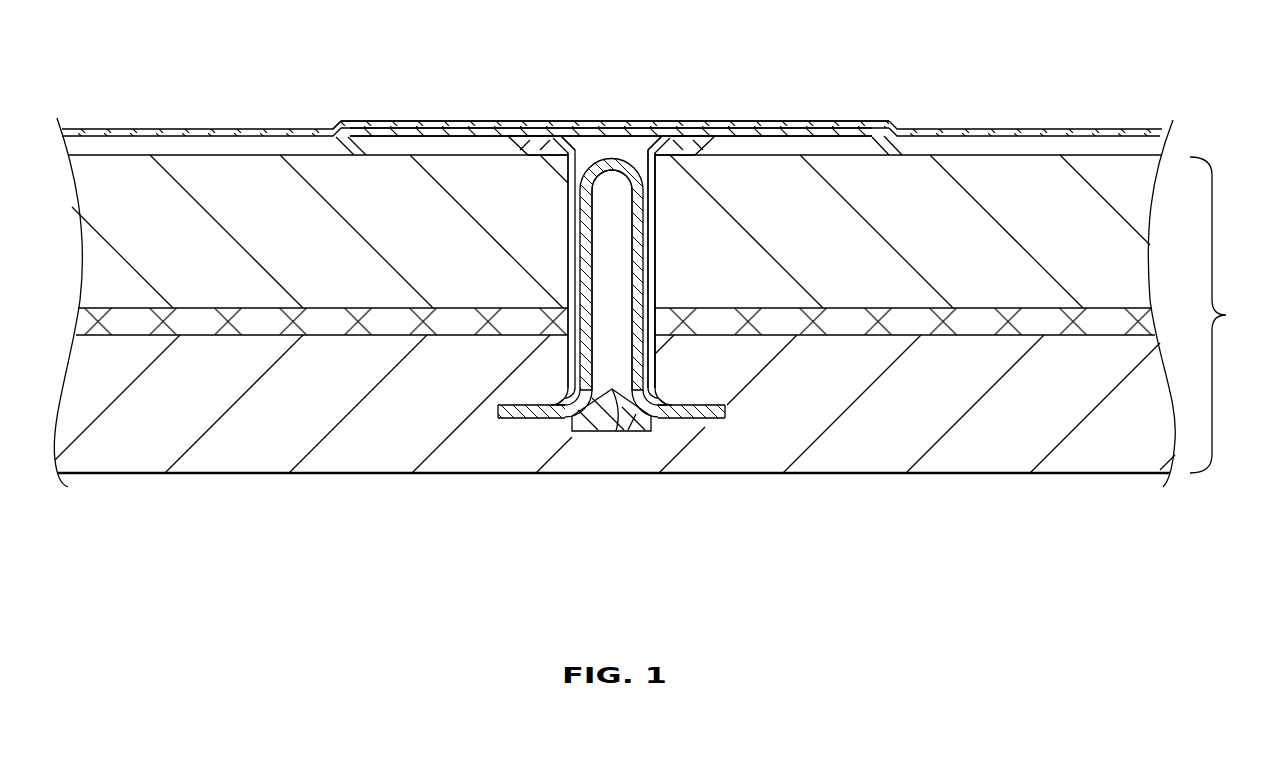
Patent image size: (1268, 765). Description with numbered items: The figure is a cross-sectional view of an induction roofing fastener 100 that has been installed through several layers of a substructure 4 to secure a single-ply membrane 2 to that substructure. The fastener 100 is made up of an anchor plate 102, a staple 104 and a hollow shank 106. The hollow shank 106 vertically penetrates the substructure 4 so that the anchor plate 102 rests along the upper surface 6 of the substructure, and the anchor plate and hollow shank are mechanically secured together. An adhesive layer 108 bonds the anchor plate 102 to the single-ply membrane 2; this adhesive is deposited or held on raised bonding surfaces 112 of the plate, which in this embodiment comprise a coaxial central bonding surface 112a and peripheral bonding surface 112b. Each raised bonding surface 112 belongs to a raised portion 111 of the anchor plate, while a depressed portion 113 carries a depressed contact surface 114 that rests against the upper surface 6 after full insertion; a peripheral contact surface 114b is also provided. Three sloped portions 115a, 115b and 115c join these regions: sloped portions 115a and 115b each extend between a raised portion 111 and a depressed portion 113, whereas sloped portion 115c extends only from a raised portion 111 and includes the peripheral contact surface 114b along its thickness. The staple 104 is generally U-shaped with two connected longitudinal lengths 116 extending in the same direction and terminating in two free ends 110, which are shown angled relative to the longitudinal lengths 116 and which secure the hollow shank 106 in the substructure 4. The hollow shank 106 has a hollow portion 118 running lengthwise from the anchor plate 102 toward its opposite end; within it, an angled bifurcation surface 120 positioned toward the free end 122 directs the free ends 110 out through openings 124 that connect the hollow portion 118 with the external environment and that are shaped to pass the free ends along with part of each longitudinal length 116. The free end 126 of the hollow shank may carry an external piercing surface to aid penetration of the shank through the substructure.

The single-ply membrane 2 is at (973, 128).
The substructure 4 is at (1219, 315).
The upper surface 6 is at (1087, 128).
The induction roofing fastener 100 is at (577, 122).
The anchor plate 102 is at (349, 122).
The staple 104 is at (637, 157).
The hollow shank 106 is at (660, 372).
The adhesive layer 108 is at (783, 122).
The free ends 110 is at (527, 418).
The raised portion 111 is at (602, 127).
The raised bonding surfaces 112 is at (402, 130).
The central bonding surface 112a is at (615, 128).
The peripheral bonding surface 112b is at (853, 122).
The depressed portion 113 is at (545, 150).
The depressed contact surfaces 114 is at (564, 152).
The peripheral contact surface 114b is at (355, 155).
The sloped portion 115a is at (553, 124).
The sloped portion 115b is at (508, 150).
The sloped portion 115c is at (334, 128).
The longitudinal lengths 116 is at (633, 280).
The hollow portion 118 is at (608, 305).
The bifurcation surface 120 is at (593, 431).
The free end 122 is at (610, 431).
The openings 124 is at (568, 418).
The free end 126 is at (643, 431).